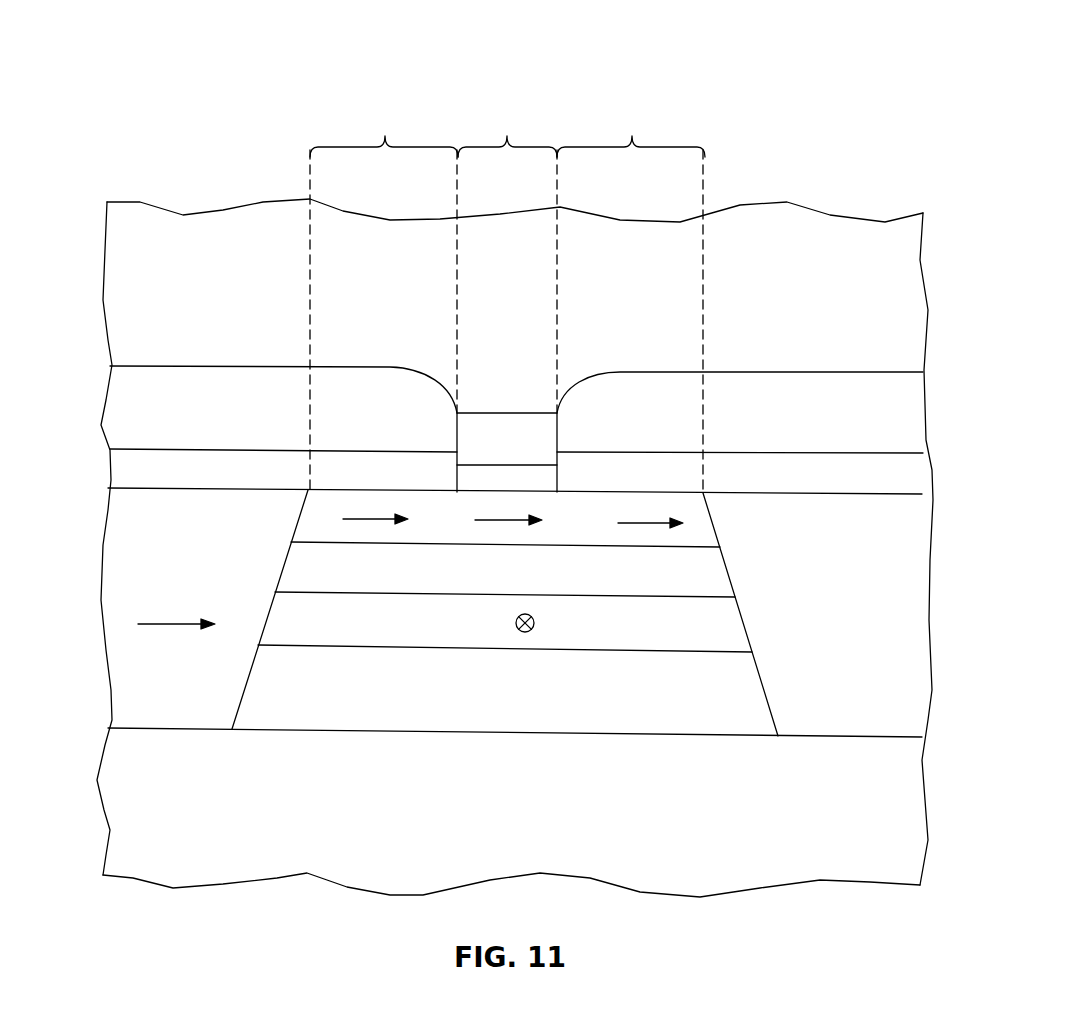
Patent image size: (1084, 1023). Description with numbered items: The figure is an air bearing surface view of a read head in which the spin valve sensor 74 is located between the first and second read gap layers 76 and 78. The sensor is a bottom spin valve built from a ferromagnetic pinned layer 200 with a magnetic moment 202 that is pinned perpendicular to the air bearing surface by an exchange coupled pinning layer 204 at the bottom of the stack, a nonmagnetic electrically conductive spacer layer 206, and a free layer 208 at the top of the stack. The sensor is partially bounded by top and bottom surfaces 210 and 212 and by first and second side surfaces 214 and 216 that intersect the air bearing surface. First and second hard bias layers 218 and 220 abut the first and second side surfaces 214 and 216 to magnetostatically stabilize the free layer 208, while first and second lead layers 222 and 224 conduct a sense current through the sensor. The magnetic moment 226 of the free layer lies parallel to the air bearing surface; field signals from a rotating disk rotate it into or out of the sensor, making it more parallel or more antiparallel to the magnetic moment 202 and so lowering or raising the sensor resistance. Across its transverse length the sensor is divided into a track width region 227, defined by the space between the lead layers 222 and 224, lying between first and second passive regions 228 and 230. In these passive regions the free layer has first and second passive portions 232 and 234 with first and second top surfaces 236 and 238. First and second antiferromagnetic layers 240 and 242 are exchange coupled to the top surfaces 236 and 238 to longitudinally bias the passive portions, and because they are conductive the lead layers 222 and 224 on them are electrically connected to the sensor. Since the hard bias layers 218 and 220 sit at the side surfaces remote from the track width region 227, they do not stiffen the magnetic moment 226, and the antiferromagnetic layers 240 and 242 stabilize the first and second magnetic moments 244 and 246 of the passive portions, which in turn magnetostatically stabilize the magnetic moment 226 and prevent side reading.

The spin valve sensor 74 is at (521, 412).
The first read gap layer 76 is at (251, 865).
The second read gap layer 78 is at (203, 227).
The pinned layer 200 is at (733, 620).
The magnetic moment of the pinned layer 202 is at (535, 623).
The pinning layer 204 is at (763, 709).
The spacer layer 206 is at (720, 578).
The free layer 208 is at (705, 531).
The top surface 210 is at (472, 490).
The bottom surface 212 is at (658, 737).
The first side surface 214 is at (245, 673).
The second side surface 216 is at (763, 672).
The first hard bias layer 218 is at (165, 584).
The second hard bias layer 220 is at (900, 589).
The first lead layer 222 is at (207, 373).
The second lead layer 224 is at (815, 385).
The magnetic moment of the free layer 226 is at (504, 520).
The track width region 227 is at (507, 219).
The first passive region 228 is at (384, 258).
The second passive region 230 is at (631, 259).
The first passive portion 232 is at (350, 497).
The second passive portion 234 is at (664, 500).
The first top surface 236 is at (405, 490).
The second top surface 238 is at (607, 493).
The first antiferromagnetic layer 240 is at (152, 458).
The second antiferromagnetic layer 242 is at (863, 470).
The first magnetic moment 244 is at (363, 518).
The second magnetic moment 246 is at (638, 522).